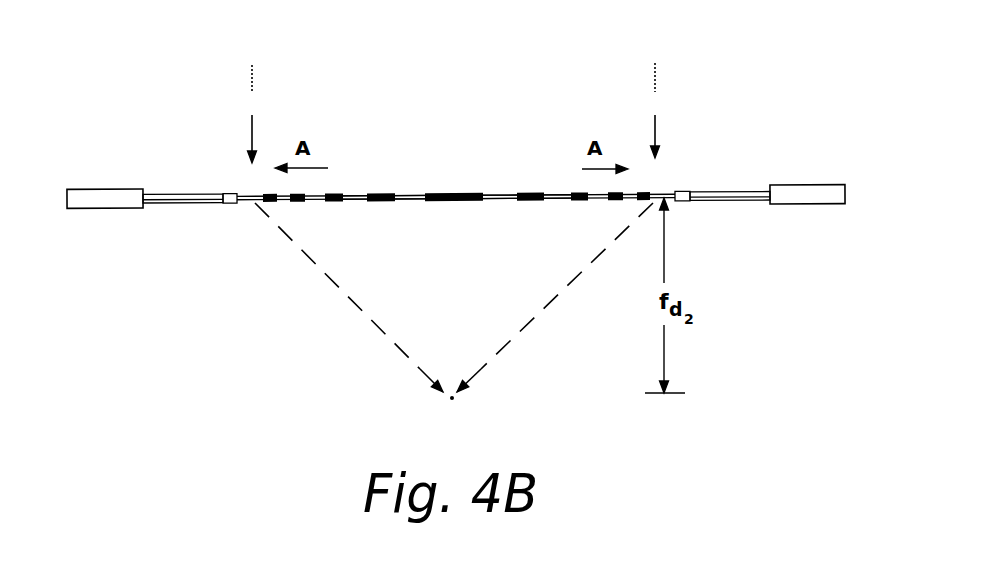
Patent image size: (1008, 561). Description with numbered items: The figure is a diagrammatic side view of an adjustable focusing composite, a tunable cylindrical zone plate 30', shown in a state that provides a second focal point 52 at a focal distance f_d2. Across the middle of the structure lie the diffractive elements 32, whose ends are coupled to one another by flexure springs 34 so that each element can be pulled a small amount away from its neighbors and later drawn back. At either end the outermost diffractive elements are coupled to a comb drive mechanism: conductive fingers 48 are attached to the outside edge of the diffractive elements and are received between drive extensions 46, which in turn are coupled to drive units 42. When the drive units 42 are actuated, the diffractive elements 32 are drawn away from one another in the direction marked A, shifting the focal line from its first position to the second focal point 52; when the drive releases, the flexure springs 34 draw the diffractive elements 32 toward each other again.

The tunable cylindrical zone plate 30' is at (494, 118).
The diffractive elements 32 is at (575, 192).
The flexure springs 34 is at (550, 201).
The drive element 42 is at (105, 188).
The drive extensions 46 is at (177, 194).
The conductive fingers 48 is at (230, 203).
The second focal point 52 is at (448, 401).